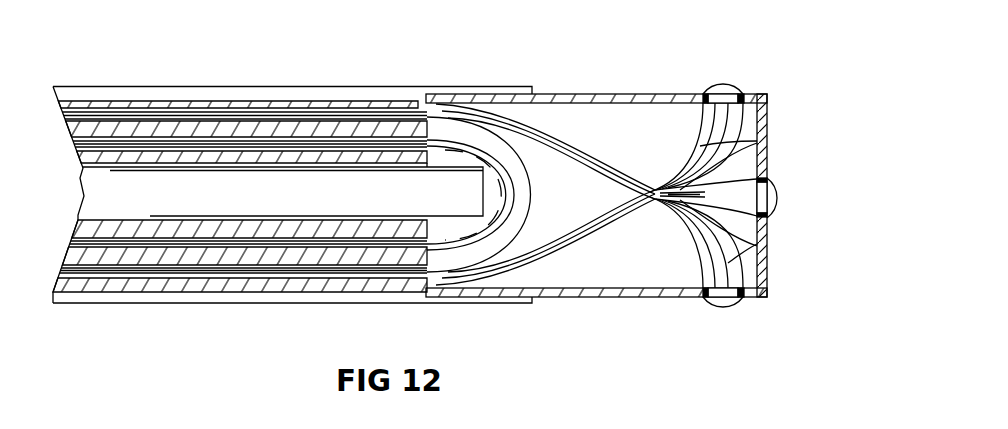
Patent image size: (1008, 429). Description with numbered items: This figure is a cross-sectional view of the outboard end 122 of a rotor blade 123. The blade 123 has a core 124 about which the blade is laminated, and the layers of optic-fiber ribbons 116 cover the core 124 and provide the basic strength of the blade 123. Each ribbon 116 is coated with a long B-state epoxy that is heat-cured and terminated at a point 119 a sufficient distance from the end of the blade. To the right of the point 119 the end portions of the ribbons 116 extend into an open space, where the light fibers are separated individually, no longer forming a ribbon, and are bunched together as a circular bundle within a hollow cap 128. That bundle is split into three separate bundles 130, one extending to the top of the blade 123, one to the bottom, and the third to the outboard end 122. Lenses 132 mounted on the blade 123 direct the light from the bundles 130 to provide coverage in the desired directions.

The ribbons of optic fibers 116 is at (222, 104).
The termination point 119 is at (428, 133).
The outboard end 122 is at (768, 275).
The blade 123 is at (188, 303).
The core 124 is at (278, 290).
The hollow cap 128 is at (633, 97).
The bundles 130 is at (758, 141).
The lenses 132 is at (727, 82).